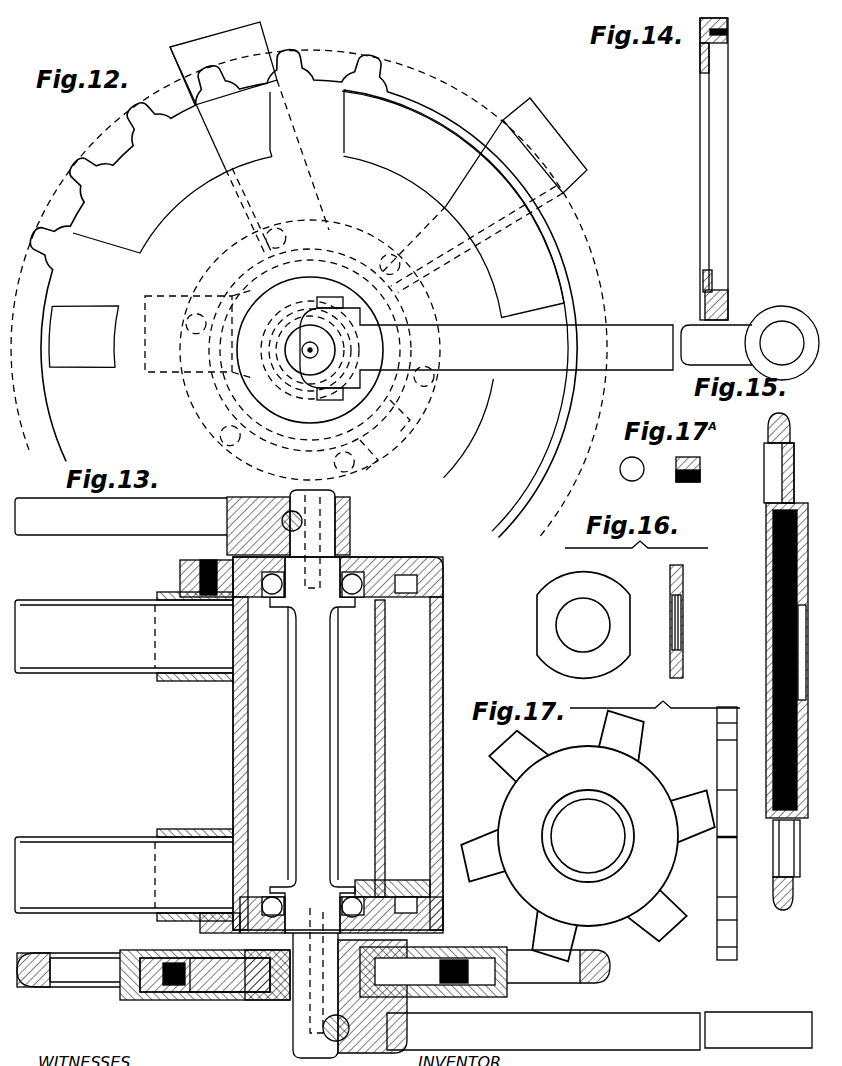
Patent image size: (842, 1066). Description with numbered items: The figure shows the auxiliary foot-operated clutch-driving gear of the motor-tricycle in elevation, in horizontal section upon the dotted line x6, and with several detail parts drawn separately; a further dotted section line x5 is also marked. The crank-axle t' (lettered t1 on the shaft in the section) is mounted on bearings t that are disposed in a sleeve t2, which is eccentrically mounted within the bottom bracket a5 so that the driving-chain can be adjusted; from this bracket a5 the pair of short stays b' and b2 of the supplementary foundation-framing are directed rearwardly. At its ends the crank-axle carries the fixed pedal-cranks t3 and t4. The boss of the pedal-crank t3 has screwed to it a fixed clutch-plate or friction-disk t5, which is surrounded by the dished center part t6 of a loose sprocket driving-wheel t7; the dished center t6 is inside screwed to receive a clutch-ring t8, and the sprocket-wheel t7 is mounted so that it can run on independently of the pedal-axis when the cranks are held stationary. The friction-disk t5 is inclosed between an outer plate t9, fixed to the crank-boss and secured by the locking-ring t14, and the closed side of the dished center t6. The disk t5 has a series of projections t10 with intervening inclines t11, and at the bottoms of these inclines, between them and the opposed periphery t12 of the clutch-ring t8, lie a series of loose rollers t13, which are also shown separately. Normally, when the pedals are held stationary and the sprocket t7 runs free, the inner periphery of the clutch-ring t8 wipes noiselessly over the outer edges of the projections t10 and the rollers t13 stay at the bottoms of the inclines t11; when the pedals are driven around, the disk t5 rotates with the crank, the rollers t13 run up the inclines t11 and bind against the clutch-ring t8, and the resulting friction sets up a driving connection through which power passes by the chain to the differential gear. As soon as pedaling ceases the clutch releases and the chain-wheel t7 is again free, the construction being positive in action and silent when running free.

In FIG. 13, the bearings t is at (311, 745).
In FIG. 13, the crank-axle t' is at (210, 938).
In FIG. 13, the crank-axle t1 is at (312, 774).
In FIG. 13, the sleeve t2 is at (385, 755).
In FIG. 13, the pedal-crank t3 is at (575, 996).
In FIG. 13, the pedal-crank t4 is at (182, 526).
In FIG. 12, the clutch-plate or friction-disk t5 is at (425, 410).
In FIG. 17, the clutch-plate or friction-disk t5 is at (715, 755).
In FIG. 13, the clutch-plate or friction-disk t5 is at (250, 990).
In FIG. 12, the dished center part t6 is at (493, 280).
In FIG. 17, the dished center part t6 is at (773, 593).
In FIG. 13, the dished center part t6 is at (215, 990).
In FIG. 12, the loose sprocket driving-wheel t7 is at (557, 260).
In FIG. 17, the loose sprocket driving-wheel t7 is at (767, 507).
In FIG. 13, the loose sprocket driving-wheel t7 is at (125, 1000).
In FIG. 14, the clutch-ring t8 is at (731, 158).
In FIG. 13, the clutch-ring t8 is at (142, 958).
In FIG. 13, the outer plate t9 is at (183, 958).
In FIG. 12, the projections t10 is at (400, 443).
In FIG. 17, the projections t10 is at (477, 867).
In FIG. 12, the inclines t11 is at (423, 427).
In FIG. 17, the inclines t11 is at (725, 773).
In FIG. 14, the periphery of clutch-ring t12 is at (727, 40).
In FIG. 13, the periphery of clutch-ring t12 is at (170, 985).
In FIG. 12, the loose rollers t13 is at (400, 248).
In FIG. 17A, the loose rollers t13 is at (676, 462).
In FIG. 16, the locking-ring t14 is at (671, 583).
In FIG. 13, the locking-ring t14 is at (375, 888).
In FIG. 12, the dotted line x5 is at (257, 350).
In FIG. 12, the dotted line x6 is at (480, 350).
In FIG. 12, the bottom bracket a5 is at (232, 410).
In FIG. 17, the bottom bracket a5 is at (446, 742).
In FIG. 13, the bottom bracket a5 is at (447, 742).
In FIG. 13, the short stay b2 is at (124, 620).
In FIG. 13, the short stay b' is at (124, 875).